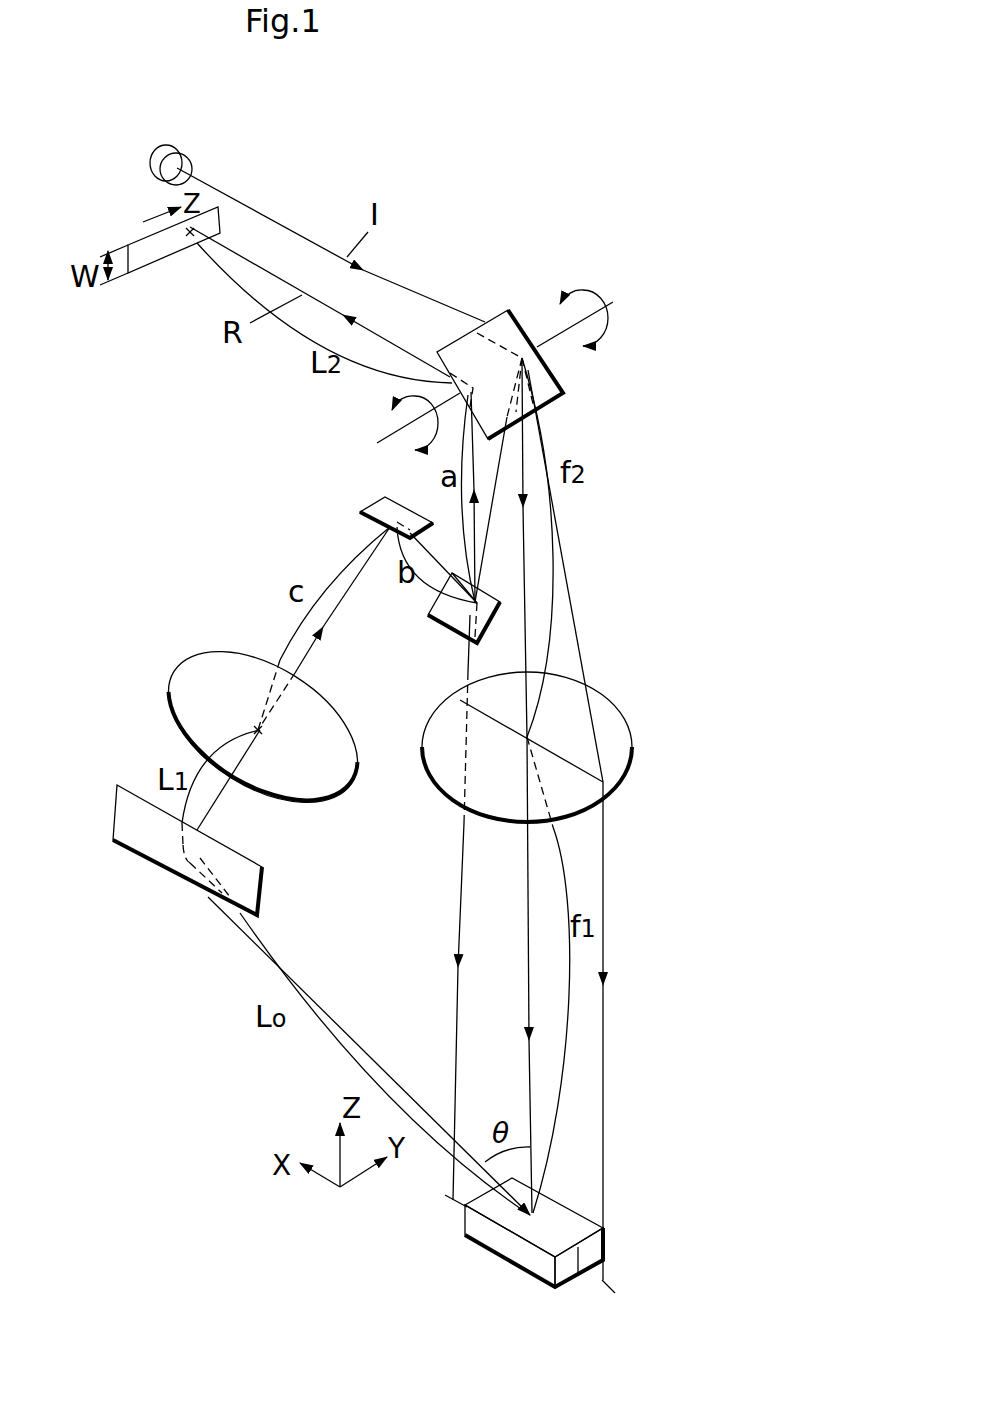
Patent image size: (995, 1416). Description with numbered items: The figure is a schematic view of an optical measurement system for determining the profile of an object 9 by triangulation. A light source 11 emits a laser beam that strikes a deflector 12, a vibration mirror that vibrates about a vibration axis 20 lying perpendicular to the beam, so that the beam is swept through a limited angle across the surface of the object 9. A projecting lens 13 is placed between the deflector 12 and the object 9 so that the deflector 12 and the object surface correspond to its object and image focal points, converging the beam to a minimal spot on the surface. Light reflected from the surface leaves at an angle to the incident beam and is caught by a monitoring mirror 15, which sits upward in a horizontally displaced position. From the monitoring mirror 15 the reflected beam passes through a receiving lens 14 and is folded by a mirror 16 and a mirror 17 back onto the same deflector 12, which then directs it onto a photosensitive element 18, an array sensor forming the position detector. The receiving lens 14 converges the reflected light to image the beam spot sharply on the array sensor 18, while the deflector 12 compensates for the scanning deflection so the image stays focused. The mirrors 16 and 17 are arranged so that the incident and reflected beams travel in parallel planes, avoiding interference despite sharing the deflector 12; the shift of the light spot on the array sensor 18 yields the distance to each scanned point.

The object 9 is at (607, 1240).
The light source 11 is at (162, 150).
The deflector 12 is at (550, 387).
The projecting lens 13 is at (633, 735).
The receiving lens 14 is at (168, 692).
The monitoring mirror 15 is at (113, 838).
The mirror 16 is at (385, 508).
The mirror 17 is at (457, 622).
The photosensitive element 18 is at (155, 250).
The vibration axis 20 is at (613, 302).